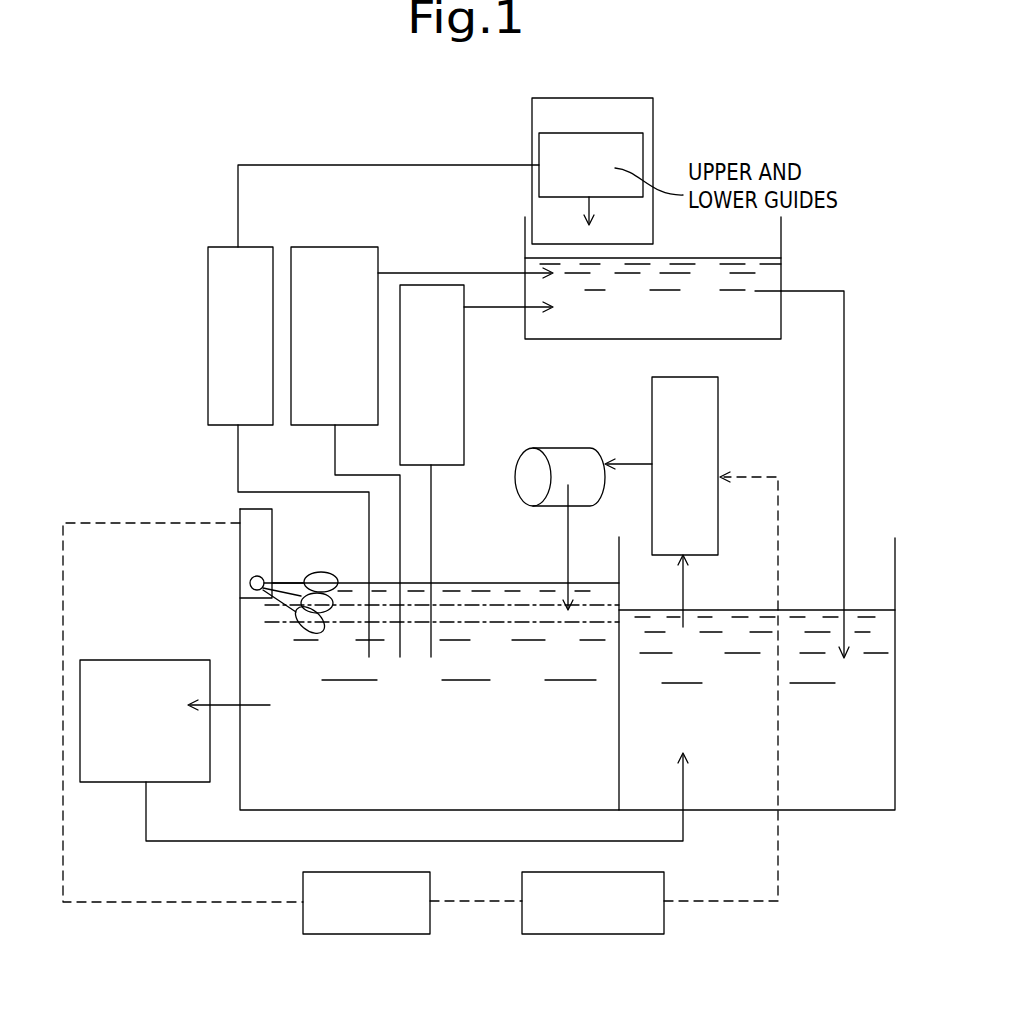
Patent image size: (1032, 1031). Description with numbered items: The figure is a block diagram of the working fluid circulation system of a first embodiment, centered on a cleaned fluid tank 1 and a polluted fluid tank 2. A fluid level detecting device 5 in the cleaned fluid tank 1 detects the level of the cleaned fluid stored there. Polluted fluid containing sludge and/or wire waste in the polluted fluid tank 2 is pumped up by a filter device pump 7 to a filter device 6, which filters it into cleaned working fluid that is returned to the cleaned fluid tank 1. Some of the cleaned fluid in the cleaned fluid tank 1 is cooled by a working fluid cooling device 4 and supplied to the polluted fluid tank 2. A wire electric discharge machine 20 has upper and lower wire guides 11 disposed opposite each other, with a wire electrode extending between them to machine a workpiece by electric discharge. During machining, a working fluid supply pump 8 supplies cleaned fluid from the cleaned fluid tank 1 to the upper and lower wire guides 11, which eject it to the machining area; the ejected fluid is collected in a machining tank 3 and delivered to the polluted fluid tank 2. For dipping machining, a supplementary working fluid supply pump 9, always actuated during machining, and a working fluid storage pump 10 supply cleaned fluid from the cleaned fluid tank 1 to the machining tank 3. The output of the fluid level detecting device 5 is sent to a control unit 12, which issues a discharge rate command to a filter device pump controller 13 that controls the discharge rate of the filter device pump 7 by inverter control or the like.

The cleaned fluid tank 1 is at (272, 802).
The polluted fluid tank 2 is at (826, 808).
The machining tank 3 is at (724, 338).
The working fluid cooling device 4 is at (118, 660).
The fluid level detecting device 5 is at (240, 512).
The filter device 6 is at (563, 448).
The filter device pump 7 is at (718, 422).
The working fluid supply pump 8 is at (222, 247).
The supplementary working fluid supply pump 9 is at (327, 247).
The working fluid storage pump 10 is at (464, 370).
The upper and lower wire guides 11 is at (653, 152).
The control unit 12 is at (380, 934).
The filter device pump controller 13 is at (597, 934).
The wire electric discharge machine 20 is at (653, 116).